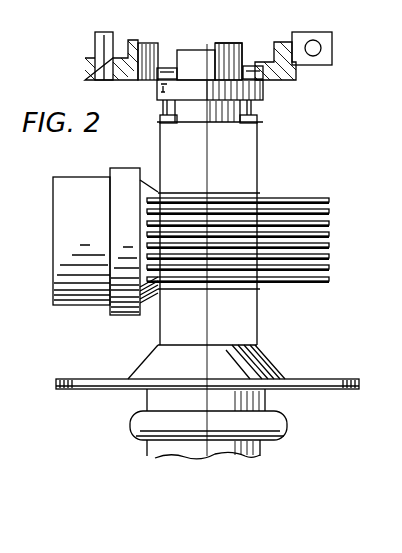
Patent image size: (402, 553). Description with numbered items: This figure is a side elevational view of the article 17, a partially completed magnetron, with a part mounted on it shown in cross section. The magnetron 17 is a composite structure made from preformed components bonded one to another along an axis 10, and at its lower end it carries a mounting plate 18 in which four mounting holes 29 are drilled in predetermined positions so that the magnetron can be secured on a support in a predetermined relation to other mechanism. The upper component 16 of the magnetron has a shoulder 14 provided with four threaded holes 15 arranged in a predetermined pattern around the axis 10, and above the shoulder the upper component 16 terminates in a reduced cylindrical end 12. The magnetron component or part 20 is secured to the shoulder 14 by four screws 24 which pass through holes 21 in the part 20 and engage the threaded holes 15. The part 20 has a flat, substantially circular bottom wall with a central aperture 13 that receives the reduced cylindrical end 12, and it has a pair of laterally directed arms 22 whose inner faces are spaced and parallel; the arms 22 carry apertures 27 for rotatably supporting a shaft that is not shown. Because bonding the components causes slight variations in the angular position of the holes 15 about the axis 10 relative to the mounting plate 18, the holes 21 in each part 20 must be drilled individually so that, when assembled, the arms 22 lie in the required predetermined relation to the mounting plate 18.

The axis 10 is at (208, 172).
The reduced cylindrical end 12 is at (198, 57).
The central aperture 13 is at (238, 62).
The shoulder 14 is at (204, 66).
The threaded holes 15 is at (157, 90).
The upper component 16 is at (197, 80).
The article 17 is at (277, 157).
The mounting plate 18 is at (119, 378).
The magnetron component or part 20 is at (122, 40).
The holes 21 is at (153, 66).
The laterally directed arms 22 is at (320, 32).
The screws 24 is at (172, 67).
The apertures 27 is at (320, 48).
The mounting holes 29 is at (79, 391).